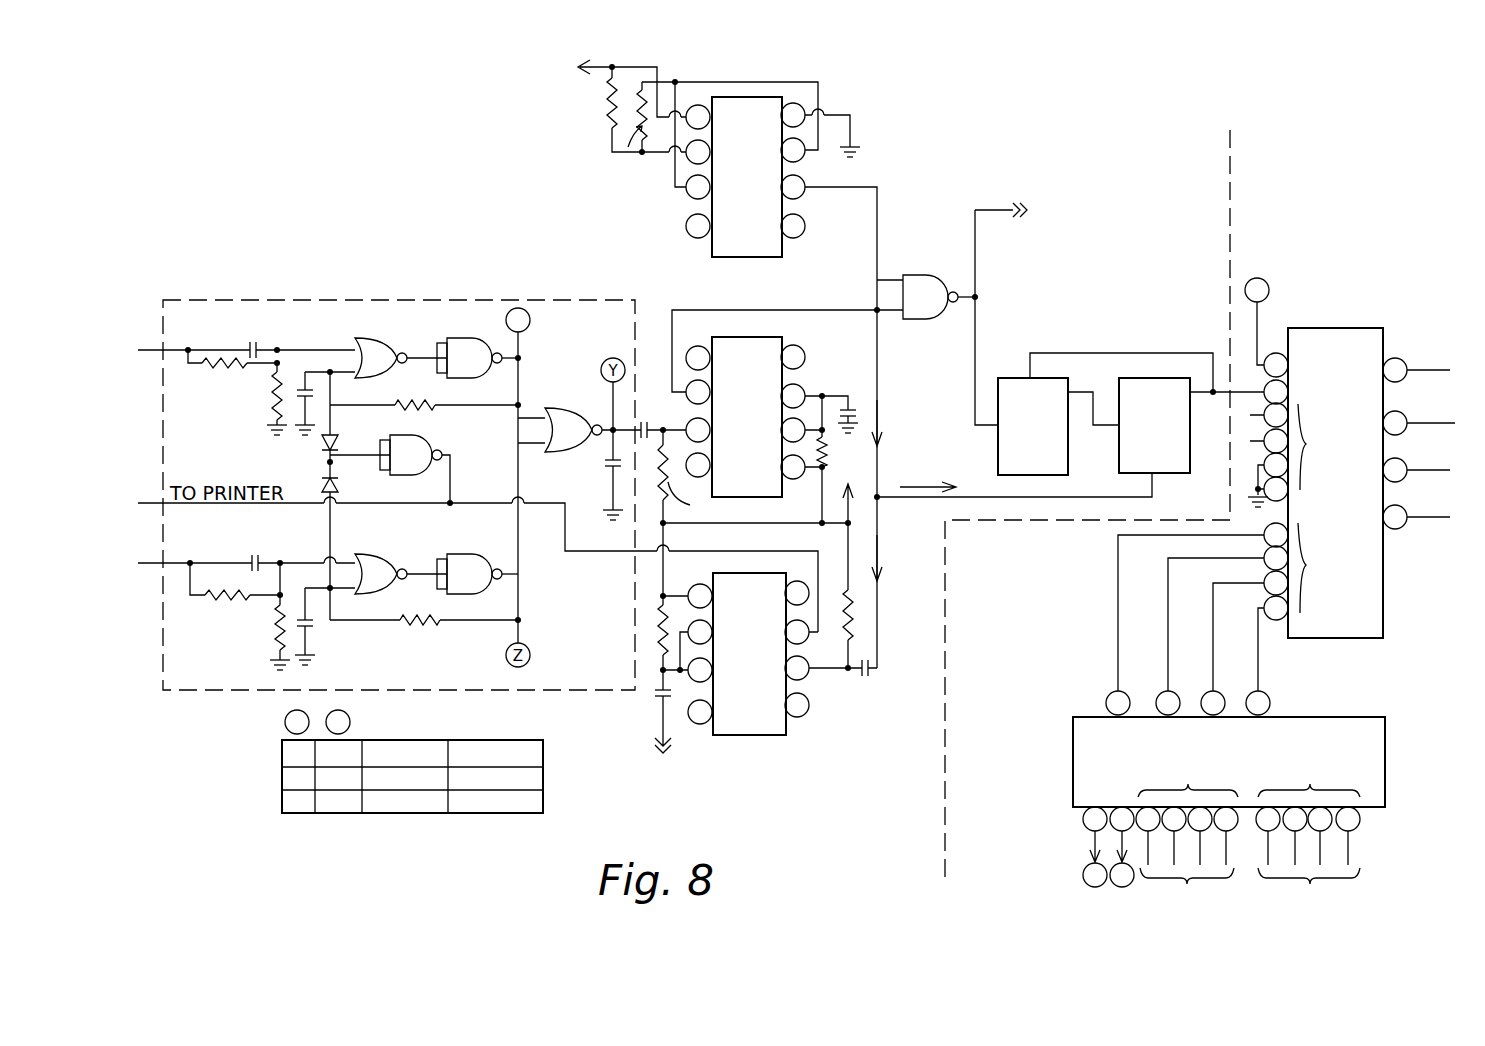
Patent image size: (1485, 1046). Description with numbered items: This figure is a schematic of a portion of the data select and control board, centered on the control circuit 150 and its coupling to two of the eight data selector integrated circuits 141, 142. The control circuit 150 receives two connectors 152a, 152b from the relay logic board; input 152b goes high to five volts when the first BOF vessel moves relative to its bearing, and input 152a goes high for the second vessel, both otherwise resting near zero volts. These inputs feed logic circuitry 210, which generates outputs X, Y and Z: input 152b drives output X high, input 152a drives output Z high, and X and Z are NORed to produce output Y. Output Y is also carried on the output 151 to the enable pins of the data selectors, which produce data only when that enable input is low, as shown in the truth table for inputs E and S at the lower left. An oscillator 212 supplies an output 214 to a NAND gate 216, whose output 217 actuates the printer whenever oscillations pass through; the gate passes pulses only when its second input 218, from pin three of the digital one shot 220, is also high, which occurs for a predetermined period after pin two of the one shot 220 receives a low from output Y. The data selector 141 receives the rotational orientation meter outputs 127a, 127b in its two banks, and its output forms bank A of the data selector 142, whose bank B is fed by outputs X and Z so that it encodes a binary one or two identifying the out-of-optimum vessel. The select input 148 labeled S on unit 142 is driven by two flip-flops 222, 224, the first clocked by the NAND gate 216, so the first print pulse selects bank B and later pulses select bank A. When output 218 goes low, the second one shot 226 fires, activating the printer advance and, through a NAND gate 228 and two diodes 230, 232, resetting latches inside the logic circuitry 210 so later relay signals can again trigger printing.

The control circuit 150 is at (508, 272).
The output 151 is at (530, 323).
The second input 152a is at (175, 563).
The first input 152b is at (172, 350).
The logic circuitry 210 is at (195, 692).
The oscillator 212 is at (732, 257).
The oscillator output 214 is at (877, 228).
The NAND gate 216 is at (915, 320).
The NAND gate output 217 is at (995, 210).
The second input to the NAND gate 218 is at (798, 308).
The digital one shot 220 is at (770, 337).
The first flip-flop 222 is at (1048, 464).
The second flip-flop 224 is at (1170, 464).
The second one shot 226 is at (760, 735).
The NAND gate 228 is at (425, 436).
The diode 230 is at (335, 442).
The diode 232 is at (338, 488).
The data selector integrated circuit 141 is at (1318, 717).
The data selector integrated circuit 142 is at (1383, 610).
The select input 148 is at (1122, 887).
The meter output 127a is at (1309, 871).
The meter output 127b is at (1187, 871).